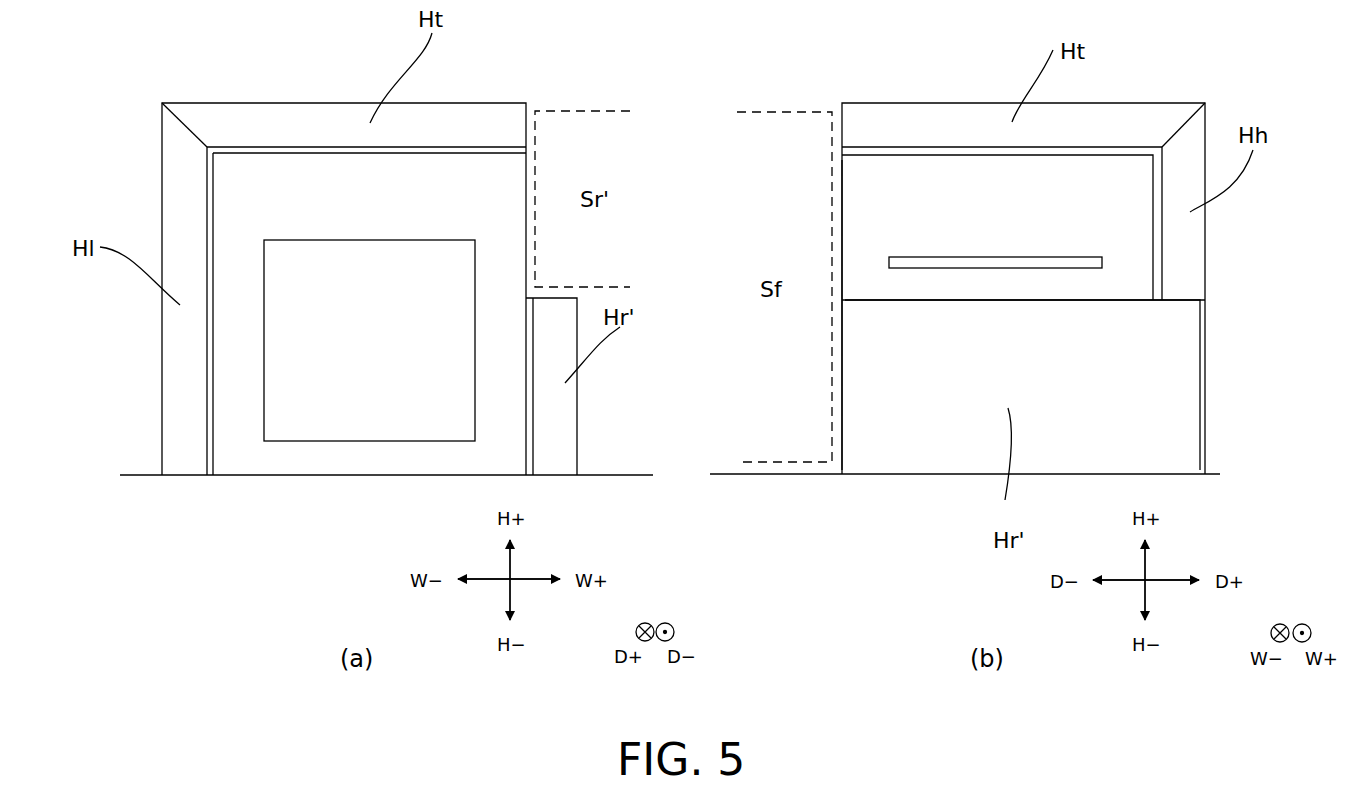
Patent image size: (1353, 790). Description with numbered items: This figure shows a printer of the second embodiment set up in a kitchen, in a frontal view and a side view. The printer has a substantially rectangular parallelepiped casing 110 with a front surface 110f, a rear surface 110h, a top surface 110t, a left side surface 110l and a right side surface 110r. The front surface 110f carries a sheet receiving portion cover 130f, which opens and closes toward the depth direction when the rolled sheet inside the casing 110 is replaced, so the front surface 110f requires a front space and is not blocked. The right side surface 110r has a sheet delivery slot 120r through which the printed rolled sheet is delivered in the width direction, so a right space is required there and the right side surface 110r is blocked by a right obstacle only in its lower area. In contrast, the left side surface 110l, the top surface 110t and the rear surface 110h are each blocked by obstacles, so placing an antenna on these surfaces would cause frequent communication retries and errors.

The casing 110 is at (227, 230).
The top surface 110t is at (410, 155).
The left side surface 110l is at (213, 327).
The right side surface 110r is at (528, 405).
The front surface 110f is at (841, 283).
The rear surface 110h is at (1155, 240).
The sheet receiving portion cover 130f is at (362, 352).
The sheet delivery slot 120r is at (960, 300).